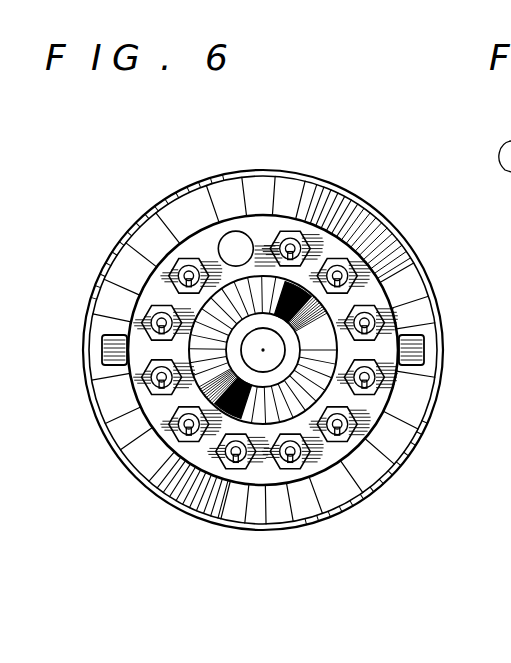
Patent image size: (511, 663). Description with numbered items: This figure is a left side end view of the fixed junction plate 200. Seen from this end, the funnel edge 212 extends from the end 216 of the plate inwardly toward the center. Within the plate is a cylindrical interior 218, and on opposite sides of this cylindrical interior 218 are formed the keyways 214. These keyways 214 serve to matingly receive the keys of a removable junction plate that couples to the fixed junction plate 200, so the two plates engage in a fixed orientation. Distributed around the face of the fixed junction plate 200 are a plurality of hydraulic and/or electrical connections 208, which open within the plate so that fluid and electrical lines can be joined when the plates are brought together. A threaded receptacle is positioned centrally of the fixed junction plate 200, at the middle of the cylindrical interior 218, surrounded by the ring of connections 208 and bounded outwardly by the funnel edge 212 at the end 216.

The fixed junction plate 200 is at (211, 157).
The hydraulic and/or electrical connections 208 is at (293, 237).
The funnel edge 212 is at (155, 240).
The keyways 214 is at (100, 349).
The end 216 is at (133, 297).
The cylindrical interior 218 is at (316, 458).